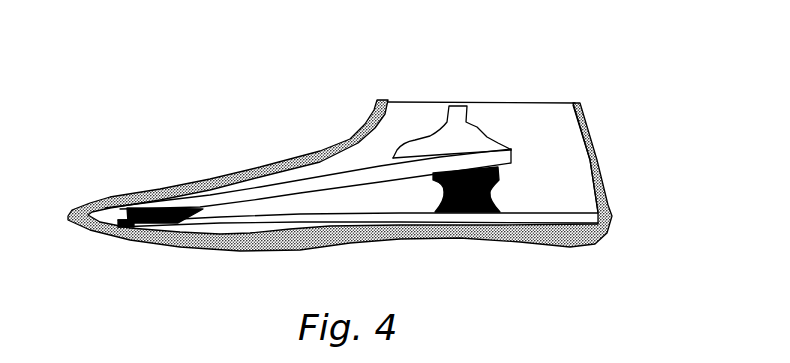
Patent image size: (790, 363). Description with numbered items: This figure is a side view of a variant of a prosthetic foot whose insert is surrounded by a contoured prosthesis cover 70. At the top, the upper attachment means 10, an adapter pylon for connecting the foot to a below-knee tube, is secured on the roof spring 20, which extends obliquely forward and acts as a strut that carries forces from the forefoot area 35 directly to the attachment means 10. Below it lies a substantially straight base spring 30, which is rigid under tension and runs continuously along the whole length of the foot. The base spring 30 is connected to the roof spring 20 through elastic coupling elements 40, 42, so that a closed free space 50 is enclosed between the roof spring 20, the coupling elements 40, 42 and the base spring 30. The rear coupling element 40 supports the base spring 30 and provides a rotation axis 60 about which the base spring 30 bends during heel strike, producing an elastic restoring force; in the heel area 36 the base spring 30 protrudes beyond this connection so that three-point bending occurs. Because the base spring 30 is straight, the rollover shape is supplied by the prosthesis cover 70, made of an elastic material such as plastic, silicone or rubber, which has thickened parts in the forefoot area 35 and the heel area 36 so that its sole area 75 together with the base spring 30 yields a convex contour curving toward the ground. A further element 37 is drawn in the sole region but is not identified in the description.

The upper attachment means 10 is at (428, 140).
The roof spring 20 is at (257, 180).
The base spring 30 is at (282, 218).
The forefoot area 35 is at (193, 261).
The heel area 36 is at (562, 197).
The sole layer 37 is at (390, 239).
The rear coupling element 40 is at (494, 190).
The coupling element 42 is at (130, 222).
The free space 50 is at (303, 207).
The rotation axis 60 is at (458, 212).
The prosthesis cover 70 is at (192, 184).
The sole area 75 is at (512, 252).